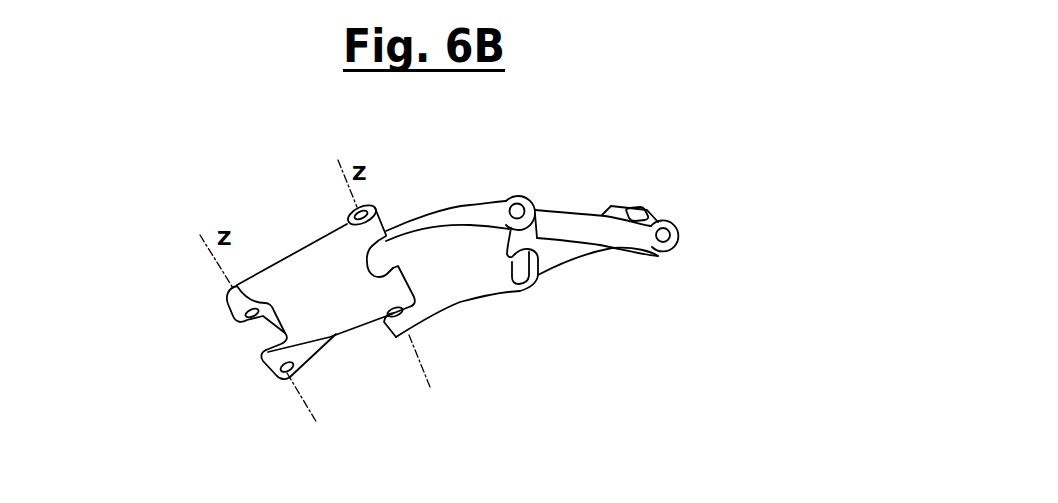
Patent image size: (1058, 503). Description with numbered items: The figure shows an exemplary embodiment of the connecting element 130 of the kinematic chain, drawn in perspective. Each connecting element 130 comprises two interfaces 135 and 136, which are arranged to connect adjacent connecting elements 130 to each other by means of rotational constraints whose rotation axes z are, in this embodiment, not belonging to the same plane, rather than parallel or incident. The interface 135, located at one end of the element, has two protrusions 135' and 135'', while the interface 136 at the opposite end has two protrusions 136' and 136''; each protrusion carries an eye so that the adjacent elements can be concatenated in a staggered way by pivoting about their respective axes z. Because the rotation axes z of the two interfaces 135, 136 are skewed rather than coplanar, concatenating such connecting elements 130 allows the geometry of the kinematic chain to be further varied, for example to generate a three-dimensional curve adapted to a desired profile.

The connecting element 130 is at (445, 305).
The interface 135 is at (664, 221).
The protrusion of interface 135' is at (668, 183).
The protrusion of interface 135'' is at (722, 255).
The interface 136 is at (256, 328).
The protrusion of interface 136' is at (192, 312).
The protrusion of interface 136'' is at (253, 395).